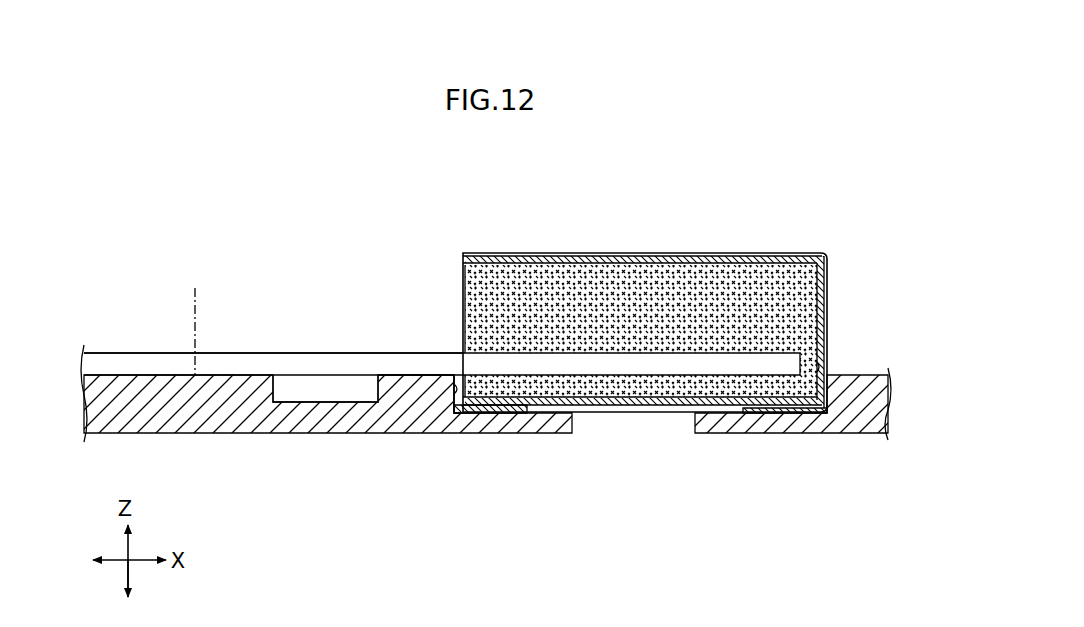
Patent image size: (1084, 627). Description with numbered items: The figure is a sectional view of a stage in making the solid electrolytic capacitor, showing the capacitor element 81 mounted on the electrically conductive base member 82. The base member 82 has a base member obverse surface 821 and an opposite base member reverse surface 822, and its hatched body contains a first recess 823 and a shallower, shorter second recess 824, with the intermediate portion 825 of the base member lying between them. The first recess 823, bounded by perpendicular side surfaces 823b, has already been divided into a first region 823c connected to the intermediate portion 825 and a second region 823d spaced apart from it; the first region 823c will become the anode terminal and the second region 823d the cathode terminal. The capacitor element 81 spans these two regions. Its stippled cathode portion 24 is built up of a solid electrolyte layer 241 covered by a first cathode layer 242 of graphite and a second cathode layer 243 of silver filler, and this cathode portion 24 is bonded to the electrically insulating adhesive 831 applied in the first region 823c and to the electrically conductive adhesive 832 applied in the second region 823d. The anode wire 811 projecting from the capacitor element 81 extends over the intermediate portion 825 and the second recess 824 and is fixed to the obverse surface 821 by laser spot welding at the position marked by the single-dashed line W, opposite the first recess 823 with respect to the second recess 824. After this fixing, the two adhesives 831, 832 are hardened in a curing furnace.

The electrically conductive base member 82 is at (121, 284).
The base member obverse surface 821 is at (165, 370).
The base member reverse surface 822 is at (187, 434).
The second recess 824 is at (318, 392).
The intermediate portion 825 is at (395, 390).
The anode wire 811 is at (289, 365).
The single-dashed line W is at (195, 318).
The capacitor element 81 is at (518, 250).
The first recess 823 is at (643, 328).
The side surfaces 823b is at (452, 386).
The first region 823c is at (578, 414).
The second region 823d is at (685, 414).
The cathode portion 24 is at (625, 190).
The solid electrolyte layer 241 is at (655, 252).
The first cathode layer 242 is at (731, 252).
The second cathode layer 243 is at (641, 401).
The electrically insulating adhesive 831 is at (465, 410).
The electrically conductive adhesive 832 is at (805, 414).